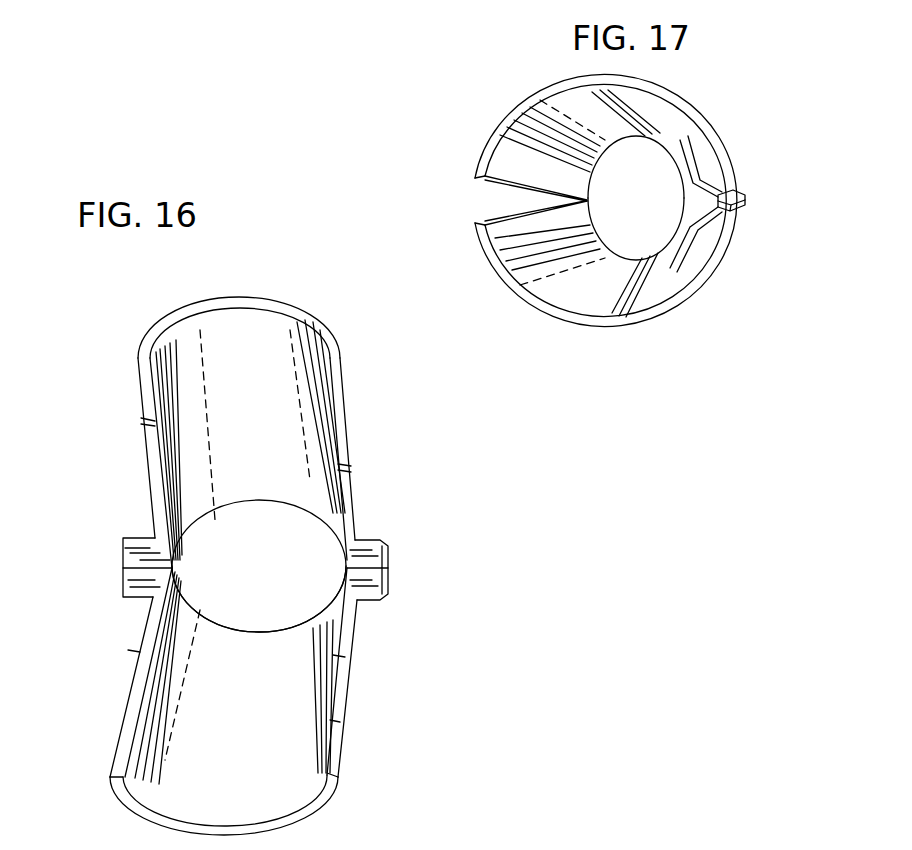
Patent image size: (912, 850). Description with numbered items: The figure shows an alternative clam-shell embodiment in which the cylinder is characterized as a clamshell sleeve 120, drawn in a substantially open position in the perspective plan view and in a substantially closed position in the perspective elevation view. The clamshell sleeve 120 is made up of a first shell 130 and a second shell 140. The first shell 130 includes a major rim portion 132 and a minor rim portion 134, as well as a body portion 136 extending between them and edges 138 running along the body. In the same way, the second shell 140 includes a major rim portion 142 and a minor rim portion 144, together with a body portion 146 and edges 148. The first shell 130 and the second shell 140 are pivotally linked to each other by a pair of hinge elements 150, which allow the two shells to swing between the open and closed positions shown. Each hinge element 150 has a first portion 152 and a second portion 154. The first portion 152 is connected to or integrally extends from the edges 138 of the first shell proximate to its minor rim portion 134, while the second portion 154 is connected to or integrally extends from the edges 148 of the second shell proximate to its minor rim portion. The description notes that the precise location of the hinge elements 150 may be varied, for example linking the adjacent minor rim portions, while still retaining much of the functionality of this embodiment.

In FIG. 16, the clamshell sleeve 120 is at (150, 263).
In FIG. 17, the clamshell sleeve 120 is at (680, 88).
In FIG. 16, the first shell 130 is at (168, 320).
In FIG. 16, the major rim portion 132 is at (218, 300).
In FIG. 17, the major rim portion 132 is at (545, 90).
In FIG. 16, the minor rim portion 134 is at (222, 512).
In FIG. 17, the minor rim portion 134 is at (618, 143).
In FIG. 16, the body portion 136 is at (308, 372).
In FIG. 17, the body portion 136 is at (528, 143).
In FIG. 16, the edges 138 is at (346, 410).
In FIG. 17, the edges 138 is at (480, 180).
In FIG. 16, the second shell 140 is at (352, 745).
In FIG. 17, the second shell 140 is at (710, 270).
In FIG. 16, the major rim portion 142 is at (325, 795).
In FIG. 17, the major rim portion 142 is at (575, 328).
In FIG. 16, the minor rim portion 144 is at (285, 628).
In FIG. 17, the minor rim portion 144 is at (665, 258).
In FIG. 16, the body portion 146 is at (160, 752).
In FIG. 17, the body portion 146 is at (557, 294).
In FIG. 16, the edges 148 is at (130, 673).
In FIG. 17, the edges 148 is at (478, 222).
In FIG. 16, the hinge elements 150 is at (105, 562).
In FIG. 17, the hinge elements 150 is at (541, 202).
In FIG. 16, the first portion 152 is at (136, 545).
In FIG. 17, the first portion 152 is at (737, 192).
In FIG. 16, the second portion 154 is at (140, 590).
In FIG. 17, the second portion 154 is at (738, 210).